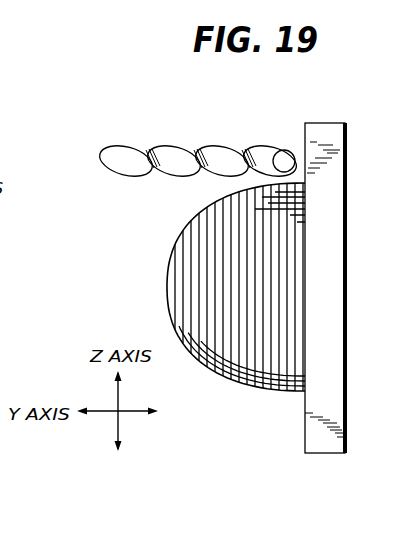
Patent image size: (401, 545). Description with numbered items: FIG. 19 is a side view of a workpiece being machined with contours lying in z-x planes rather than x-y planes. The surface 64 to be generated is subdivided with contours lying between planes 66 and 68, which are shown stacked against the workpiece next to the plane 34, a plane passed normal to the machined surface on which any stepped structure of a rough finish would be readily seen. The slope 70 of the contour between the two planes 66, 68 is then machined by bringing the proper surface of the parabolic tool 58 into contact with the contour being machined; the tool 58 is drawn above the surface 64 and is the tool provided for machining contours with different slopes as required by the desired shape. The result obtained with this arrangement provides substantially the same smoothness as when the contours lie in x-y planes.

The plane 34 is at (326, 442).
The tool 58 is at (179, 153).
The surface 64 is at (181, 243).
The plane 66 is at (298, 378).
The plane 68 is at (262, 386).
The slope 70 is at (290, 380).